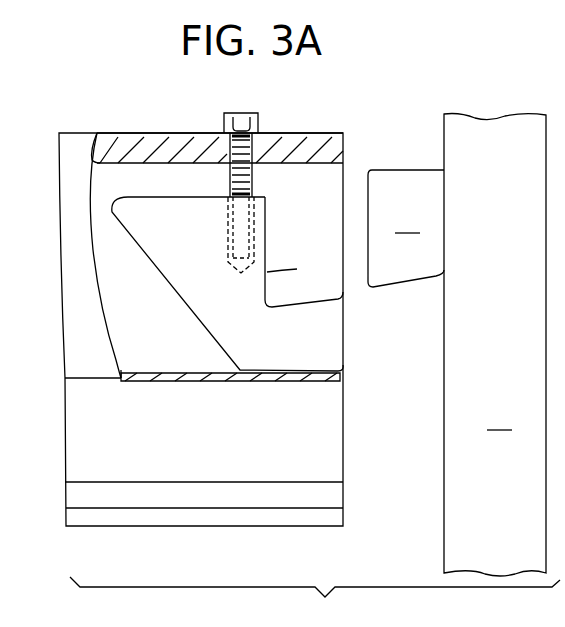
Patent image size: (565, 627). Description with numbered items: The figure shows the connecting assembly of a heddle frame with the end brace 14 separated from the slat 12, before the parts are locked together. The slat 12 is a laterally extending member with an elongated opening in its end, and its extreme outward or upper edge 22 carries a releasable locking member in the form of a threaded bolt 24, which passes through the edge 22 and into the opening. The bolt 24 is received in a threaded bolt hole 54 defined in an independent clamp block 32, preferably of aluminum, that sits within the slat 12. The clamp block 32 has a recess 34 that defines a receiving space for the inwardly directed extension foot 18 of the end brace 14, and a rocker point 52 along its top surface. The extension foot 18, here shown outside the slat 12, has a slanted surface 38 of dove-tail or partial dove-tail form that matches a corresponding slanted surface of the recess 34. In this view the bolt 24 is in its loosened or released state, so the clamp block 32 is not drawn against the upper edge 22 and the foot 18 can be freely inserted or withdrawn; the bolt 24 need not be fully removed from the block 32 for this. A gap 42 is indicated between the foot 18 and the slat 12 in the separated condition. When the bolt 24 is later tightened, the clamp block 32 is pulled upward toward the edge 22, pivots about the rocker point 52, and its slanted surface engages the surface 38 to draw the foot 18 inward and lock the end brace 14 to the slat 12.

The slat 12 is at (61, 266).
The end brace 14 is at (495, 345).
The extension foot 18 is at (406, 228).
The upper edge 22 is at (97, 135).
The threaded bolt 24 is at (258, 113).
The clamp block 32 is at (188, 291).
The recess 34 is at (290, 305).
The slanted surface 38 is at (382, 287).
The gap 42 is at (407, 322).
The rocker point 52 is at (128, 206).
The threaded bolt hole 54 is at (226, 233).